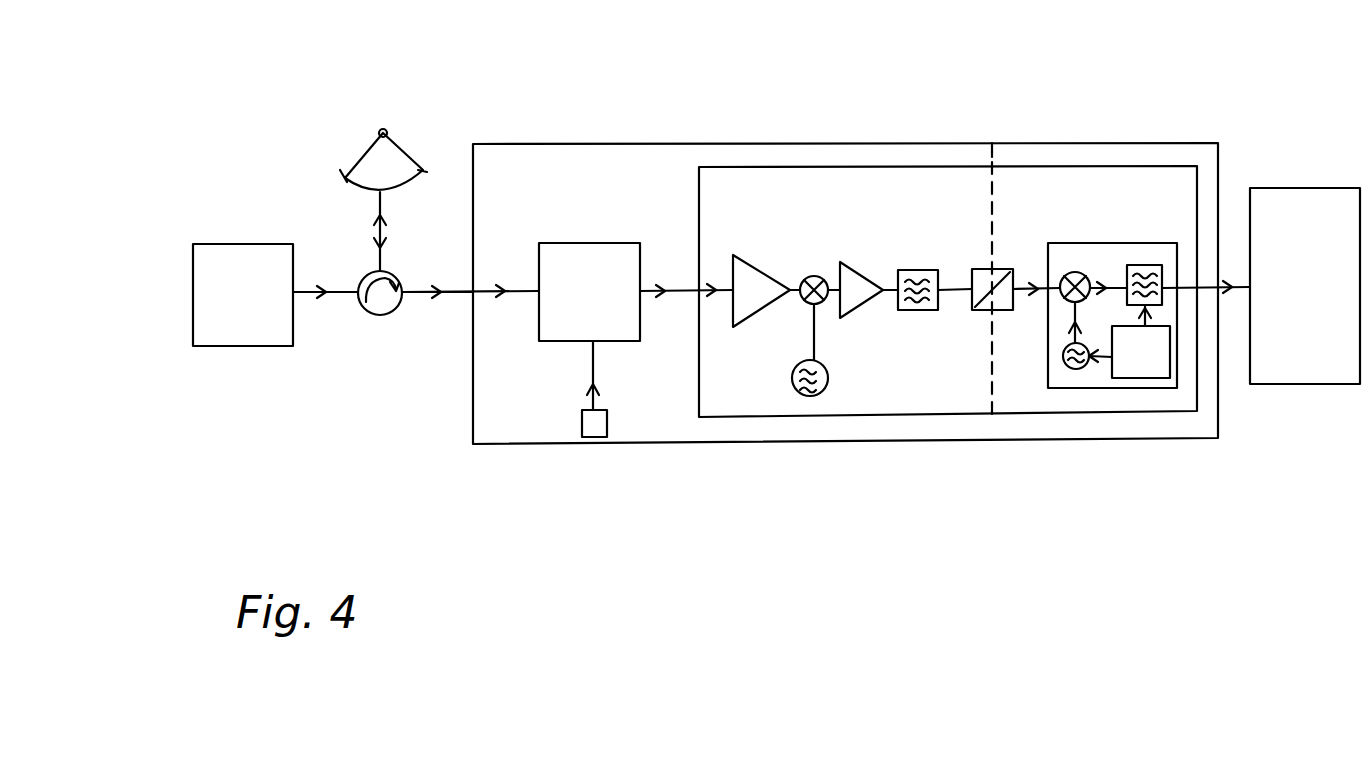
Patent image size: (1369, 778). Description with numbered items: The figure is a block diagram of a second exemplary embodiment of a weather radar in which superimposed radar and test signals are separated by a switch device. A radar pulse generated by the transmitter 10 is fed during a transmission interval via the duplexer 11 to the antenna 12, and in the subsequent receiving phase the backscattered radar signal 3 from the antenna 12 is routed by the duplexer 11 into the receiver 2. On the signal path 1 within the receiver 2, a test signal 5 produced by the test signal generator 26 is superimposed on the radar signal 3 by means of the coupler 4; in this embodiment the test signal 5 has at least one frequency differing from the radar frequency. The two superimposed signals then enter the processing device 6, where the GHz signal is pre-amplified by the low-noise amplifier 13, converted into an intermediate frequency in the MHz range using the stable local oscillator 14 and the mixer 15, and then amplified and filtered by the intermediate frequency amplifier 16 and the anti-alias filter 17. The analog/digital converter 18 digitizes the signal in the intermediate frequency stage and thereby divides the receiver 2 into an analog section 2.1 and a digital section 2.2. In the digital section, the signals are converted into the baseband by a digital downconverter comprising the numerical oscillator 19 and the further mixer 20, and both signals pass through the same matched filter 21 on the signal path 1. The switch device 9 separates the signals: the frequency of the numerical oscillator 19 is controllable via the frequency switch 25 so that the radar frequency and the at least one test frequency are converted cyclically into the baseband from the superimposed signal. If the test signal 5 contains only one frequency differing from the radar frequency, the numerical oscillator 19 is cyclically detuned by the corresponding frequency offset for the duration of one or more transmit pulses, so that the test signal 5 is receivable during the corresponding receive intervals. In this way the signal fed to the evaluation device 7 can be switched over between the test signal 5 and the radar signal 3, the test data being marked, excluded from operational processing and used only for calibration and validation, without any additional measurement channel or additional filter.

The signal path 1 is at (513, 295).
The receiver 2 is at (508, 445).
The analog section 2.1 is at (975, 152).
The digital section 2.2 is at (1025, 152).
The radar signal 3 is at (421, 297).
The coupler 4 is at (592, 243).
The test signal 5 is at (600, 397).
The processing device 6 is at (730, 418).
The evaluation device 7 is at (1318, 384).
The switch device 9 is at (1070, 389).
The transmitter 10 is at (228, 346).
The duplexer 11 is at (372, 315).
The antenna 12 is at (397, 142).
The low-noise amplifier 13 is at (750, 265).
The stable local oscillator 14 is at (828, 376).
The mixer 15 is at (812, 272).
The intermediate frequency amplifier 16 is at (857, 265).
The anti-alias filter 17 is at (918, 270).
The analog/digital converter 18 is at (1005, 275).
The numerical oscillator 19 is at (1063, 362).
The further mixer 20 is at (1073, 265).
The matched filter 21 is at (1145, 265).
The frequency switch 25 is at (1150, 378).
The test signal generator 26 is at (590, 437).